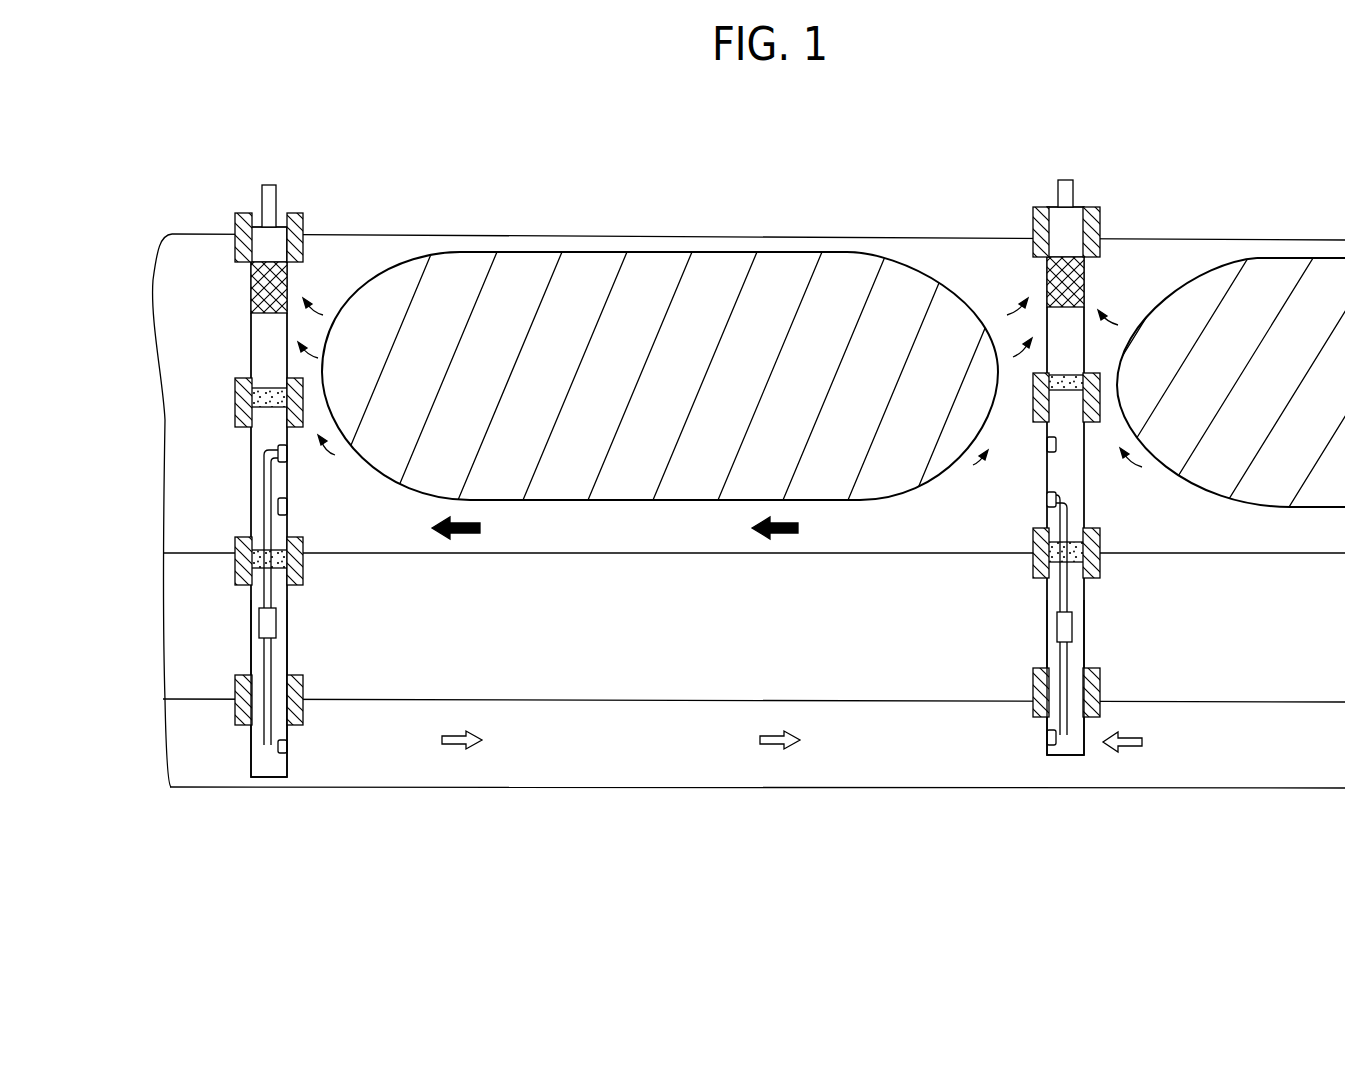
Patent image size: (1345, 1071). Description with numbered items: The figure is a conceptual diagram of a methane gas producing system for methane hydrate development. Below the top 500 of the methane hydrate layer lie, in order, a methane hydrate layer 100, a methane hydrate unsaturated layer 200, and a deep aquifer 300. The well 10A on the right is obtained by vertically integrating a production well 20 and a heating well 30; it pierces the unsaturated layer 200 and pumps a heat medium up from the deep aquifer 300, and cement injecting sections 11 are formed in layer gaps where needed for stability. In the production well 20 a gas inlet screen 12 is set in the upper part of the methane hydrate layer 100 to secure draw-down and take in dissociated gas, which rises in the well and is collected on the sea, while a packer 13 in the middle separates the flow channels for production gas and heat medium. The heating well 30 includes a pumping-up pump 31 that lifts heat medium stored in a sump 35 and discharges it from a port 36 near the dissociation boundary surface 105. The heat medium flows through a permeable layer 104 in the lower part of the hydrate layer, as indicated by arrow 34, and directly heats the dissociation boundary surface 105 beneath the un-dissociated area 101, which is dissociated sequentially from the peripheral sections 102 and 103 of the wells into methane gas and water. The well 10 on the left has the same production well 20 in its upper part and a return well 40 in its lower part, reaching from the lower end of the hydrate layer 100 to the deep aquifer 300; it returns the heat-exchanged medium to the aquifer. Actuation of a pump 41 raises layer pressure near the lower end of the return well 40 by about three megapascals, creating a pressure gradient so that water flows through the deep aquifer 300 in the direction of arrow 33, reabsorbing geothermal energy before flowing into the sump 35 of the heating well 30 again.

The well 10 is at (273, 150).
The well 10A is at (1068, 143).
The cement injecting section 11 is at (238, 213).
The gas inlet screen 12 is at (252, 296).
The packer 13 is at (272, 392).
The production well 20 is at (221, 270).
The heating well 30 is at (1025, 644).
The pumping-up pump 31 is at (1073, 627).
The arrow 33 is at (770, 748).
The arrow 34 is at (777, 536).
The sump 35 is at (1070, 745).
The port 36 is at (1047, 497).
The return well 40 is at (309, 635).
The pump 41 is at (260, 627).
The methane hydrate layer 100 is at (145, 236).
The un-dissociated area (solid phase) 101 is at (716, 253).
The peripheral section of the well 102 is at (324, 282).
The peripheral section of the well 103 is at (330, 485).
The permeable layer 104 is at (533, 528).
The dissociation boundary surface 105 is at (687, 500).
The methane hydrate unsaturated layer 200 is at (145, 557).
The deep aquifer 300 is at (145, 704).
The top of the methane hydrate layer 500 is at (393, 234).